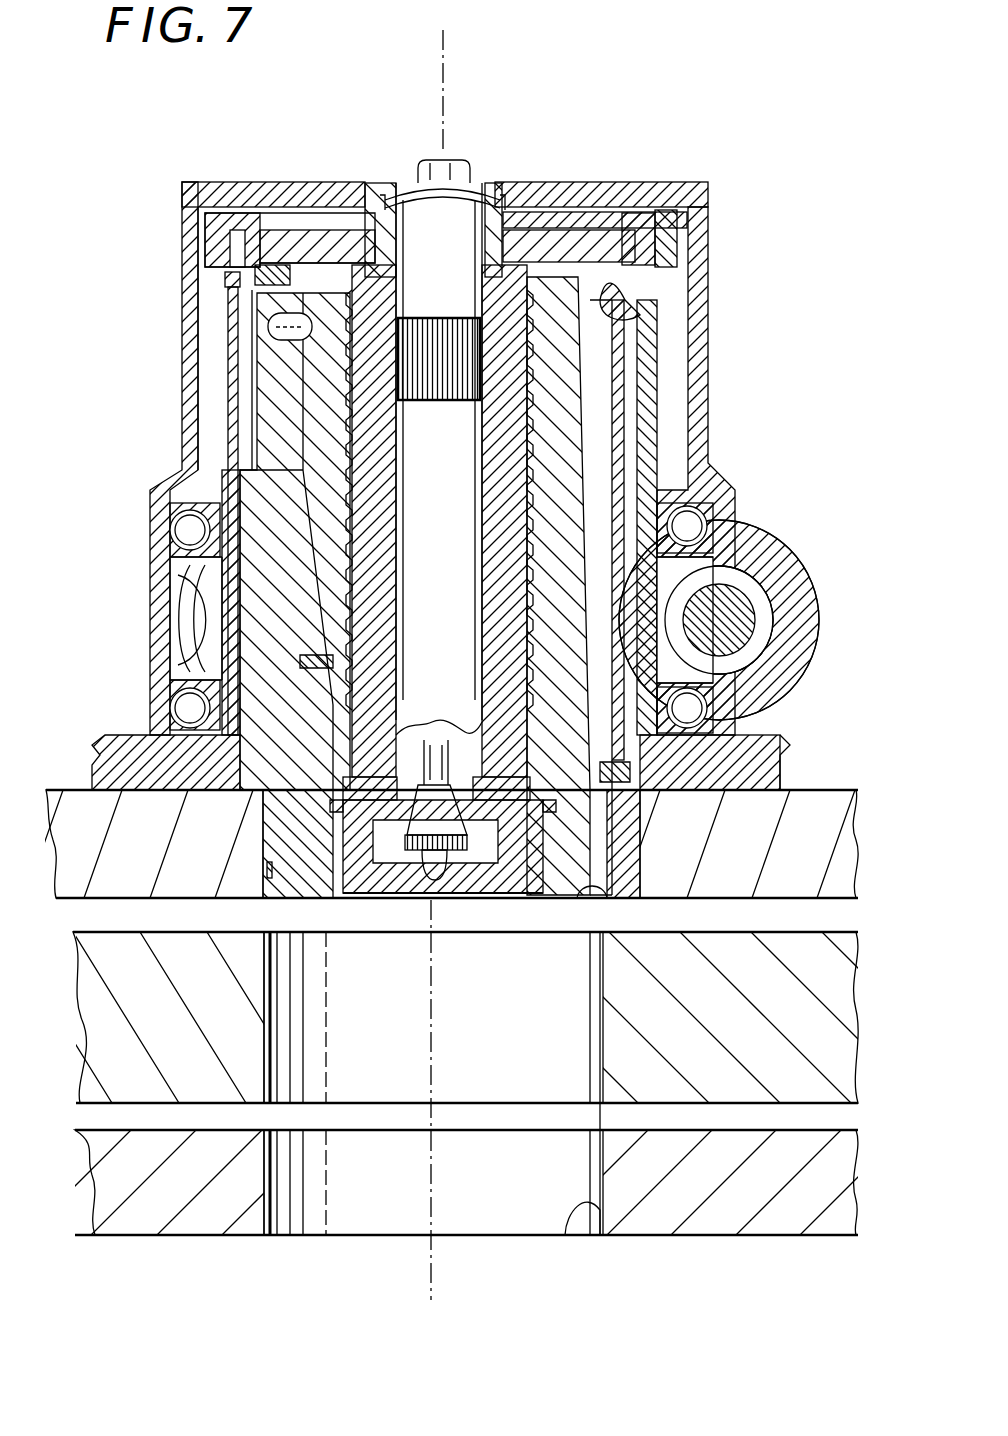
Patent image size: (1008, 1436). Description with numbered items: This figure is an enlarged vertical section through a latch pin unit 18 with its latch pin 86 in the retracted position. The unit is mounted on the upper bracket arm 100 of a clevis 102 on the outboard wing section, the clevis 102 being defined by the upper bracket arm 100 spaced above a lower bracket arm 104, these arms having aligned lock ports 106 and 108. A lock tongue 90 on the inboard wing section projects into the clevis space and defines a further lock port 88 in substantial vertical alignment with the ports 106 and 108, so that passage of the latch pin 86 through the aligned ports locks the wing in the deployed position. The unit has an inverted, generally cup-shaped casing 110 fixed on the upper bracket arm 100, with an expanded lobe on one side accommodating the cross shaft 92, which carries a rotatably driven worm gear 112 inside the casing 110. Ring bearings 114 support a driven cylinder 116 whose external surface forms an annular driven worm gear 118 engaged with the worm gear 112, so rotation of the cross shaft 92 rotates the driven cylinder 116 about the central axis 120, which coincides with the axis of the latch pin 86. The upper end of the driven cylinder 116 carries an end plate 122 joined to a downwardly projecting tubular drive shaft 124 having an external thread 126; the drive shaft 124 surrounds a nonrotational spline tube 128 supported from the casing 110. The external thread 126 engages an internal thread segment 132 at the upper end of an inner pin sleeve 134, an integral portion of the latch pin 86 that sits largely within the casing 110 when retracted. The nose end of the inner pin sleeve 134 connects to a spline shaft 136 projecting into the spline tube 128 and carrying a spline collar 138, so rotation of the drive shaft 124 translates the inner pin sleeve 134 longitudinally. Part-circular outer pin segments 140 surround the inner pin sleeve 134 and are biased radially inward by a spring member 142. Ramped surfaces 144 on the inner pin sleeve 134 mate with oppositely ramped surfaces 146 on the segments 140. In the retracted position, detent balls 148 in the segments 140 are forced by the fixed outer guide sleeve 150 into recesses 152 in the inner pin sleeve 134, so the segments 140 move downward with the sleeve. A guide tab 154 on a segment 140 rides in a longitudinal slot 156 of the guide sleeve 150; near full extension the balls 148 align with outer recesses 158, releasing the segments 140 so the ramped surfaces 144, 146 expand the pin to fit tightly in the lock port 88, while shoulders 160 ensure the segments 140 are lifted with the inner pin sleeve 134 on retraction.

The latch pin unit 18 is at (496, 689).
The latch pin 86 is at (398, 905).
The lock port 88 is at (592, 1063).
The lock tongue 90 is at (767, 1014).
The cross shaft 92 is at (728, 630).
The upper bracket arm 100 is at (808, 798).
The clevis 102 is at (64, 768).
The lower bracket arm 104 is at (167, 1204).
The lock port 106 is at (590, 900).
The lock port 108 is at (567, 1247).
The casing 110 is at (705, 390).
The worm gear 112 is at (765, 610).
The ring bearings 114 is at (700, 515).
The driven cylinder 116 is at (195, 410).
The annular driven worm gear 118 is at (185, 600).
The central axis 120 is at (443, 78).
The end plate 122 is at (545, 210).
The tubular drive shaft 124 is at (490, 495).
The external thread 126 is at (540, 600).
The spline tube 128 is at (470, 628).
The internal thread segment 132 is at (352, 195).
The inner pin sleeve 134 is at (600, 280).
The spline shaft 136 is at (462, 686).
The spline collar 138 is at (420, 335).
The outer pin segments 140 is at (273, 822).
The spring member 142 is at (240, 368).
The ramped surfaces 144 is at (402, 470).
The ramped surfaces 146 is at (520, 550).
The detent balls 148 is at (268, 322).
The outer guide sleeve 150 is at (262, 470).
The recesses 152 is at (303, 192).
The guide tab 154 is at (653, 313).
The longitudinal slot 156 is at (625, 375).
The recesses 158 is at (298, 668).
The shoulders 160 is at (212, 640).